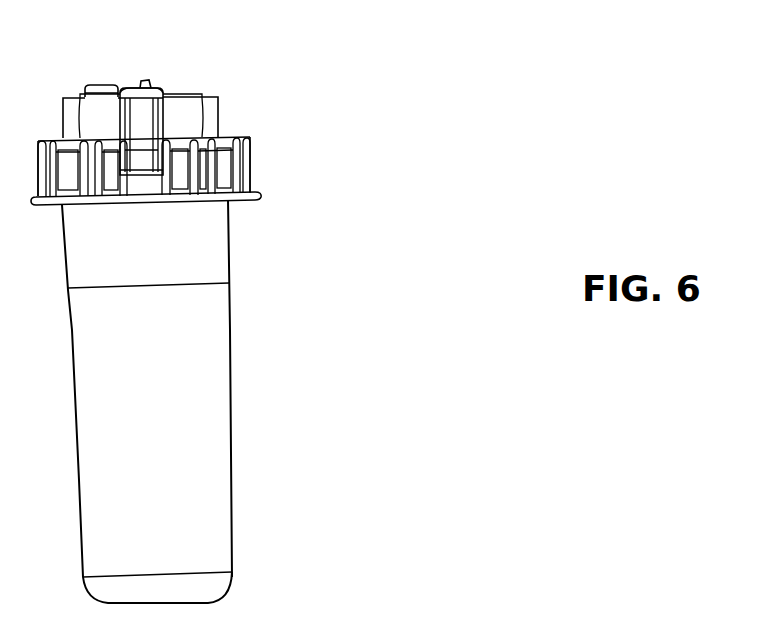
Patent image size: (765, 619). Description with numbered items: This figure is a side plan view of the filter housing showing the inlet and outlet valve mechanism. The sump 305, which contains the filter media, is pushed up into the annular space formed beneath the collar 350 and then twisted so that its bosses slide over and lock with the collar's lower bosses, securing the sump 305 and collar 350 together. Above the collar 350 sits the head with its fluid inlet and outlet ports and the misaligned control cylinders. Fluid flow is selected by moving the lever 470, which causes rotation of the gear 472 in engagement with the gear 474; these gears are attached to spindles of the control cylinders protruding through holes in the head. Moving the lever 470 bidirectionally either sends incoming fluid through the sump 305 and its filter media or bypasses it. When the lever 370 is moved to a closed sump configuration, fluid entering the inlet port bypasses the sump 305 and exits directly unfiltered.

The sump 305 is at (245, 395).
The collar 350 is at (219, 106).
The lever 370 is at (143, 124).
The lever 470 is at (144, 80).
The gear 472 is at (160, 88).
The gear 474 is at (102, 83).